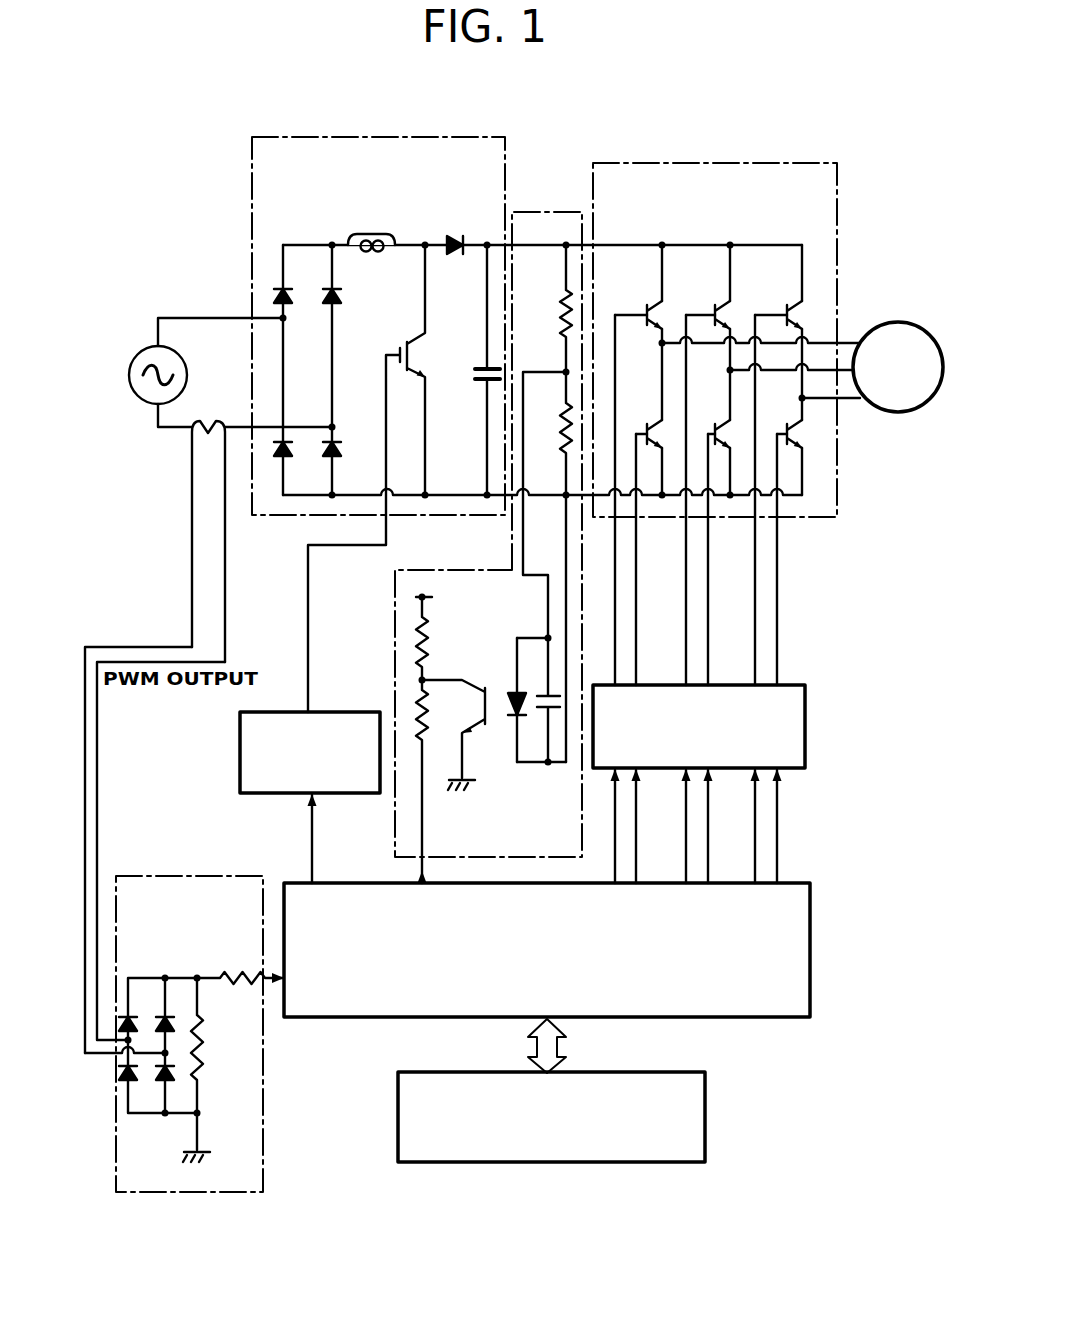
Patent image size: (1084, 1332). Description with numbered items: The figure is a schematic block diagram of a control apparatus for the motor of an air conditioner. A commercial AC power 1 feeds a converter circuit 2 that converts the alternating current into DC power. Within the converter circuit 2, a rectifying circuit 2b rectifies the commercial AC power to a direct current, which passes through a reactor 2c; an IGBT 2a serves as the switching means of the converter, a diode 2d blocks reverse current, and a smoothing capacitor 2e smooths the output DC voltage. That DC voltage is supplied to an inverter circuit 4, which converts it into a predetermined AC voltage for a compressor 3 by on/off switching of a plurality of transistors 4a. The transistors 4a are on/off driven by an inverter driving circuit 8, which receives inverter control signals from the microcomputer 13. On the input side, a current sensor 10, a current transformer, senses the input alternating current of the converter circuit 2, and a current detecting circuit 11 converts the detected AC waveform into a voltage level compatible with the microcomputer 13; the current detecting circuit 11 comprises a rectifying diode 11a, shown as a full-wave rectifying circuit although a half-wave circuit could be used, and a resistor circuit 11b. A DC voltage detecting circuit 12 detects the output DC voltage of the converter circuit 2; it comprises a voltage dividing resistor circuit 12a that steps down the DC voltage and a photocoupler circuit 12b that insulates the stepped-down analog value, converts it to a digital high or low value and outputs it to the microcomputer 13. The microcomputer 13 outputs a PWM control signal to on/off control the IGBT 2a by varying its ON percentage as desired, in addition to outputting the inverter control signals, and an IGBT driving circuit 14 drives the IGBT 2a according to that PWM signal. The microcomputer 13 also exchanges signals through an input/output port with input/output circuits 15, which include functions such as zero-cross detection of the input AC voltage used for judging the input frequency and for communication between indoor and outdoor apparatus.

The commercial AC power 1 is at (133, 359).
The converter circuit 2 is at (428, 136).
The IGBT 2a is at (399, 343).
The rectifying circuit 2b is at (307, 370).
The reactor 2c is at (369, 254).
The diode 2d is at (455, 258).
The smoothing capacitor 2e is at (476, 376).
The compressor 3 is at (892, 322).
The inverter circuit 4 is at (758, 163).
The transistors 4a is at (737, 464).
The inverter driving circuit 8 is at (796, 685).
The current sensor 10 is at (206, 421).
The current detecting circuit 11 is at (177, 876).
The rectifying diode 11a is at (160, 1064).
The resistor circuit 11b is at (233, 1067).
The DC voltage detecting circuit 12 is at (552, 211).
The voltage dividing resistor circuit 12a is at (558, 366).
The photocoupler circuit 12b is at (500, 682).
The microcomputer 13 is at (812, 930).
The IGBT driving circuit 14 is at (352, 712).
The input/output circuits 15 is at (706, 1101).